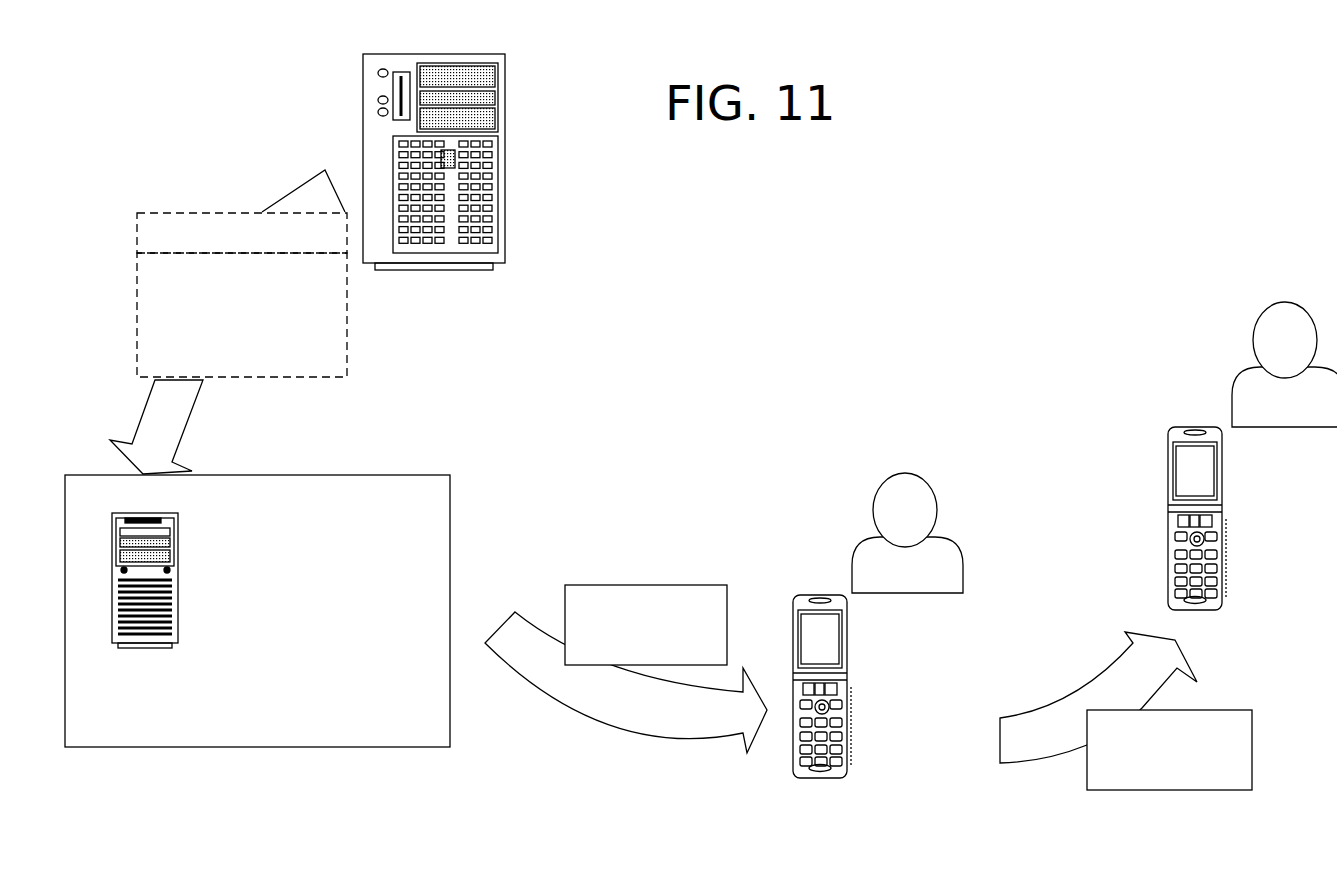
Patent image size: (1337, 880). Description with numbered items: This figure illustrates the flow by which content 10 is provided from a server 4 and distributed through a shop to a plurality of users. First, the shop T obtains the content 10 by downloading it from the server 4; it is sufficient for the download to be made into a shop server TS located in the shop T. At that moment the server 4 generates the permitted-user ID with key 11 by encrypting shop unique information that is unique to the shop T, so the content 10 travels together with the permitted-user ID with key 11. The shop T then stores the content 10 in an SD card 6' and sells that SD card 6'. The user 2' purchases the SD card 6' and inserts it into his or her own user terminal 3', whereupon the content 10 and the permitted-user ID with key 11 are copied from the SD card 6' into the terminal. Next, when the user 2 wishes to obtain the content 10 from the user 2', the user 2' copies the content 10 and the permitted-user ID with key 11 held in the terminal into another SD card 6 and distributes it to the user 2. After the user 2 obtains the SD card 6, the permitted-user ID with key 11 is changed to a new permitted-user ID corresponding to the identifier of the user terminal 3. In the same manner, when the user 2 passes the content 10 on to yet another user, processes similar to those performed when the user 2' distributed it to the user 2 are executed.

The content 10 is at (247, 213).
The permitted-user ID with key 11 is at (348, 328).
The server 4 is at (507, 104).
The shop T is at (450, 483).
The shop server TS is at (182, 618).
The SD card 6' is at (626, 638).
The user 2' is at (905, 493).
The user terminal 3' is at (874, 693).
The user 2 is at (1279, 324).
The user terminal 3 is at (1247, 529).
The SD card 6 is at (1164, 723).